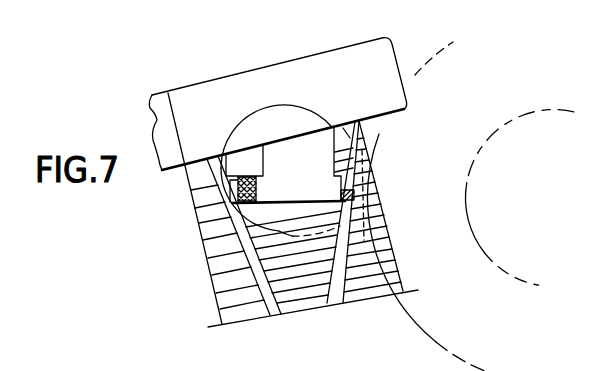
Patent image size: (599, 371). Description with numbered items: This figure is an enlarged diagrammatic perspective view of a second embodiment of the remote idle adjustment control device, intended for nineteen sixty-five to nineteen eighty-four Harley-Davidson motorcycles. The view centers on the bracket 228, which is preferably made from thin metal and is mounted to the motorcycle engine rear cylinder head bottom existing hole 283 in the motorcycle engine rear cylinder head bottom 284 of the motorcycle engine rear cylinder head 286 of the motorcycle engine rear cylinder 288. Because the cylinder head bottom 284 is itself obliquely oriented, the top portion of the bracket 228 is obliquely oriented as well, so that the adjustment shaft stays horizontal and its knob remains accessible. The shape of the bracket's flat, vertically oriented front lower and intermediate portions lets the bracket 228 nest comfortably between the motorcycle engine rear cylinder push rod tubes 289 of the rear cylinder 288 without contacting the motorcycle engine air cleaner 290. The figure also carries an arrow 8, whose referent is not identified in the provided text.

The sensor assembly 8 is at (241, 121).
The motorcycle engine rear cylinder head 286 is at (244, 88).
The motorcycle engine rear cylinder head bottom existing hole 283 is at (293, 135).
The bracket 228 is at (319, 148).
The motorcycle engine rear cylinder head bottom 284 is at (377, 137).
The motorcycle engine rear cylinder 288 is at (213, 243).
The motorcycle engine rear cylinder push rod tubes 289 is at (328, 278).
The motorcycle engine air cleaner 290 is at (455, 158).